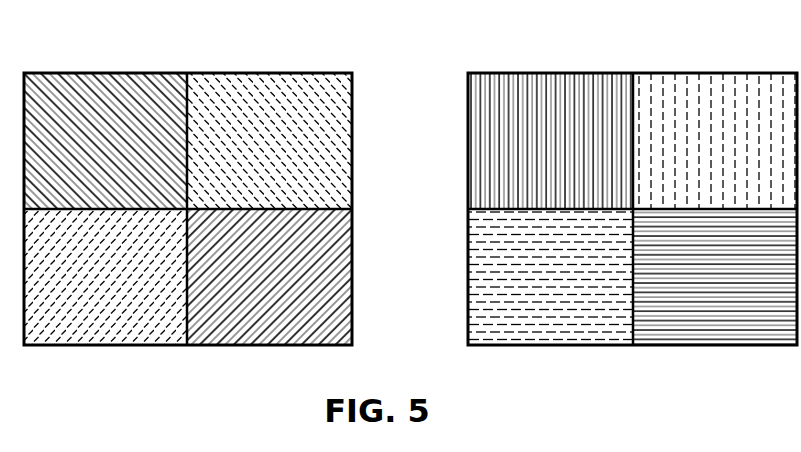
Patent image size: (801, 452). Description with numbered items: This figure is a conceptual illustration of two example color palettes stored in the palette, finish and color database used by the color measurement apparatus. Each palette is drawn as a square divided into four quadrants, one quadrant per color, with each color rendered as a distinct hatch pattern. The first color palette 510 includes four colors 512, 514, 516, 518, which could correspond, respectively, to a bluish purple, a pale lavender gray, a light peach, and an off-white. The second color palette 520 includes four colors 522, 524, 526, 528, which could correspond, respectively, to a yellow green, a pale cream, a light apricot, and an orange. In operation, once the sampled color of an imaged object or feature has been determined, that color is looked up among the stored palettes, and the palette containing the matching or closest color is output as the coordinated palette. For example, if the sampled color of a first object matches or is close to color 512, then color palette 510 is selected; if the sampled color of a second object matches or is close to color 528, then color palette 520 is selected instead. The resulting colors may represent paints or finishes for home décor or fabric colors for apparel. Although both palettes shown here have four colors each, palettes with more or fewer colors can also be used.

The color palette 510 is at (188, 175).
The color 512 is at (83, 157).
The color 514 is at (247, 157).
The color 516 is at (84, 292).
The color 518 is at (247, 292).
The color palette 520 is at (632, 175).
The color 522 is at (529, 157).
The color 524 is at (694, 157).
The color 526 is at (529, 292).
The color 528 is at (694, 292).